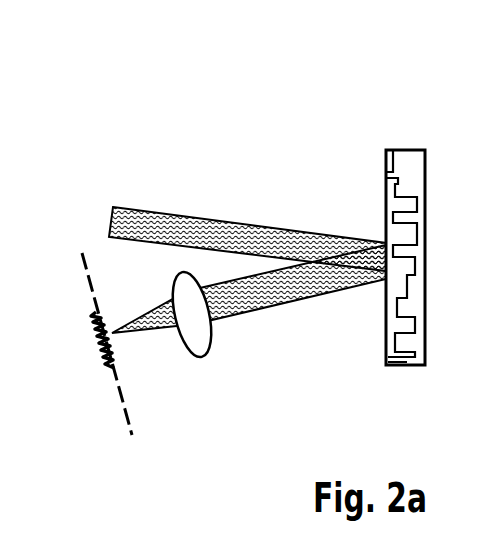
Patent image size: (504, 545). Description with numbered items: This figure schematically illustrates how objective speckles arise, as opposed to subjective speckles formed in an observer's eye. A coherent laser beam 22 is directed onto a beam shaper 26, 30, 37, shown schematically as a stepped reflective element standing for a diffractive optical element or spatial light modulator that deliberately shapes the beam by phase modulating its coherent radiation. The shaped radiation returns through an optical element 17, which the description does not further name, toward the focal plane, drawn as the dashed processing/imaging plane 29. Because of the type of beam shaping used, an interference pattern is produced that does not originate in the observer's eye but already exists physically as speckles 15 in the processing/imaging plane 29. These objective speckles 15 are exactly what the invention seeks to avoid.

The speckles 15 is at (118, 351).
The lens 17 is at (175, 282).
The laser beam 22 is at (157, 212).
The beam shaper 26 is at (376, 220).
The processing/imaging plane 29 is at (88, 253).
The beam shaper 30 is at (405, 257).
The reflective surface 37 is at (388, 150).